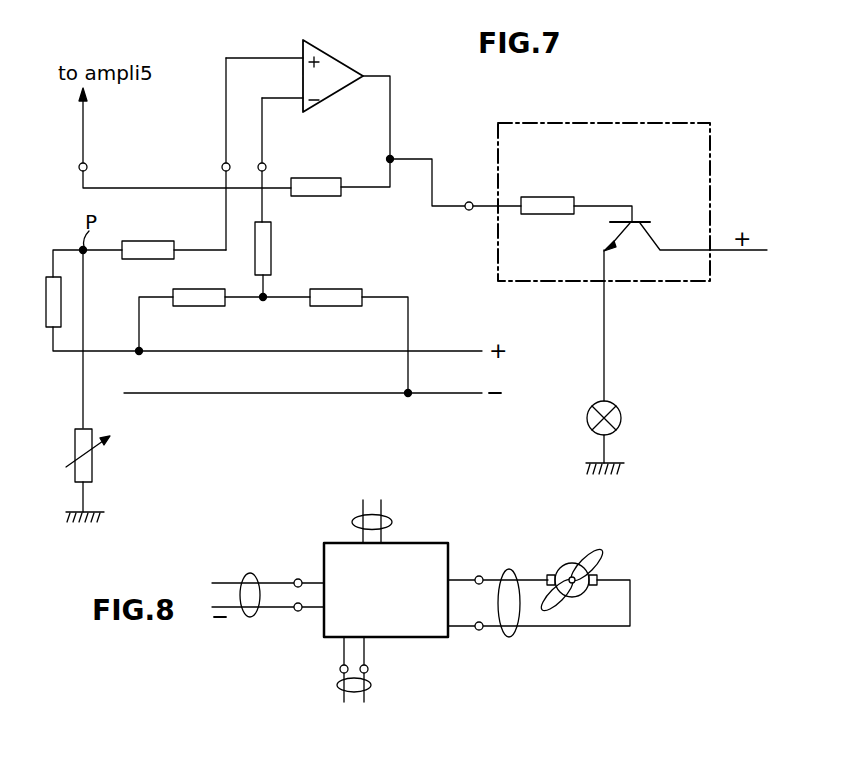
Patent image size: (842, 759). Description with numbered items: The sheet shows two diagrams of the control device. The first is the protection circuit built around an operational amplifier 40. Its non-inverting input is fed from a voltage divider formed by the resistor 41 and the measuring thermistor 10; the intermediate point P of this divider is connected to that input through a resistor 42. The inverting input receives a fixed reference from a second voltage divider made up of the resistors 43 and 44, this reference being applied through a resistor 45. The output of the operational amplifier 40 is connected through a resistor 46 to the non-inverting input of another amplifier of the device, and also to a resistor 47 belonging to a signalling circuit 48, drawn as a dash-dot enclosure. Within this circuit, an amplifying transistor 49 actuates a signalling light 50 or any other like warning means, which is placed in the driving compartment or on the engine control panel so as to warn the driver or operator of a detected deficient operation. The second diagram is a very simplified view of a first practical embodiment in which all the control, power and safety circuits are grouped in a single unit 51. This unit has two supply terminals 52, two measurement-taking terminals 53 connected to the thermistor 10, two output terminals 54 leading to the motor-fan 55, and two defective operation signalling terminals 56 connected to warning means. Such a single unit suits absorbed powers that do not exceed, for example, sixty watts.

In FIG. 7, the measuring thermistor 10 is at (93, 471).
In FIG. 7, the operational amplifier 40 is at (340, 70).
In FIG. 7, the resistor 41 is at (48, 302).
In FIG. 7, the resistor 42 is at (150, 241).
In FIG. 7, the resistor 43 is at (196, 300).
In FIG. 7, the resistor 44 is at (331, 300).
In FIG. 7, the resistor 45 is at (272, 258).
In FIG. 7, the resistor 46 is at (314, 186).
In FIG. 7, the resistor 47 is at (547, 196).
In FIG. 7, the signalling circuit 48 is at (715, 203).
In FIG. 7, the amplifying transistor 49 is at (651, 237).
In FIG. 7, the signalling light 50 is at (622, 418).
In FIG. 8, the single unit 51 is at (436, 551).
In FIG. 8, the supply terminals 52 is at (250, 620).
In FIG. 8, the measurement-taking terminals 53 is at (371, 687).
In FIG. 8, the output terminals 54 is at (509, 637).
In FIG. 8, the motor-fan 55 is at (566, 565).
In FIG. 8, the defective operation signalling terminals 56 is at (392, 522).